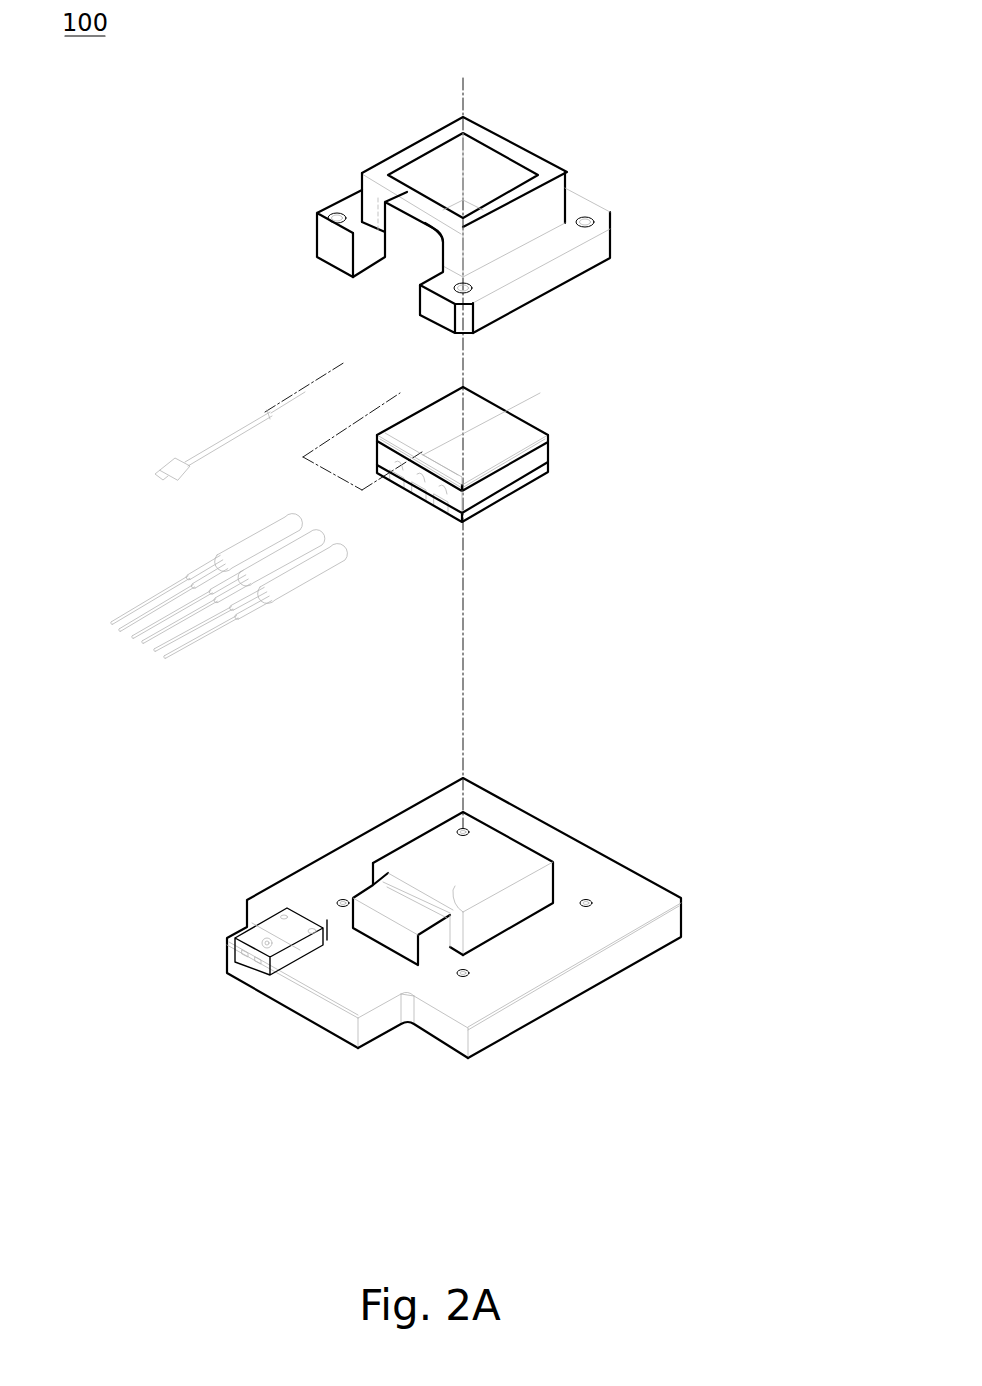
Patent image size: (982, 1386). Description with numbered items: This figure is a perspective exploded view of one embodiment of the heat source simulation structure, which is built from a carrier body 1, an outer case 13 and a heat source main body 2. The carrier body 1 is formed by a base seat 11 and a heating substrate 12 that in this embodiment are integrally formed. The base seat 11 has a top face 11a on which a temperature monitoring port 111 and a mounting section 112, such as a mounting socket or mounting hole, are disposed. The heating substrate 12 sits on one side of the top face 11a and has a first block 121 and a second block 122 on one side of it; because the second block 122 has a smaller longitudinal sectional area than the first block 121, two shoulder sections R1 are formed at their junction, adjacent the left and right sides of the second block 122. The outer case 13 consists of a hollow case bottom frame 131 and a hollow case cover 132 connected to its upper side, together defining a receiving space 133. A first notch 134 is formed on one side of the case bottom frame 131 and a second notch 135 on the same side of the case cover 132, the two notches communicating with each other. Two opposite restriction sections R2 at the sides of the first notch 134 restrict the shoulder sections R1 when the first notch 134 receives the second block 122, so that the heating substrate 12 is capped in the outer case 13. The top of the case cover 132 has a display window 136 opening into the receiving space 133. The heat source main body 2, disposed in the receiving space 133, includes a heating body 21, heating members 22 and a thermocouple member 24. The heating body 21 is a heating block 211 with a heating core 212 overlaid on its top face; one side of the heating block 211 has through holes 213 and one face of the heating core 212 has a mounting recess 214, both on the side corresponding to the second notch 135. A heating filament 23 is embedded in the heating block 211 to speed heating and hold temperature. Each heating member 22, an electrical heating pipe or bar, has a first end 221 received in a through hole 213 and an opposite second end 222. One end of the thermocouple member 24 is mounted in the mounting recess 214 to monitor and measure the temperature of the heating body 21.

The carrier body 1 is at (469, 947).
The base seat 11 is at (422, 949).
The top face 11a is at (407, 1054).
The temperature monitoring port 111 is at (237, 910).
The mounting section 112 is at (517, 1040).
The heating substrate 12 is at (582, 871).
The first block 121 is at (558, 883).
The second block 122 is at (546, 915).
The shoulder section R1 is at (532, 843).
The outer case 13 is at (416, 185).
The case bottom frame 131 is at (318, 179).
The case cover 132 is at (478, 207).
The receiving space 133 is at (463, 118).
The first notch 134 is at (321, 253).
The second notch 135 is at (317, 204).
The display window 136 is at (498, 173).
The restriction section R2 is at (342, 289).
The heat source main body 2 is at (431, 517).
The heating body 21 is at (475, 459).
The heating block 211 is at (393, 436).
The heating core 212 is at (495, 439).
The through holes 213 is at (471, 505).
The mounting recess 214 is at (474, 419).
The heating member 22 is at (431, 571).
The first end 221 is at (322, 559).
The second end 222 is at (164, 604).
The heating filament 23 is at (790, 678).
The thermocouple member 24 is at (480, 560).